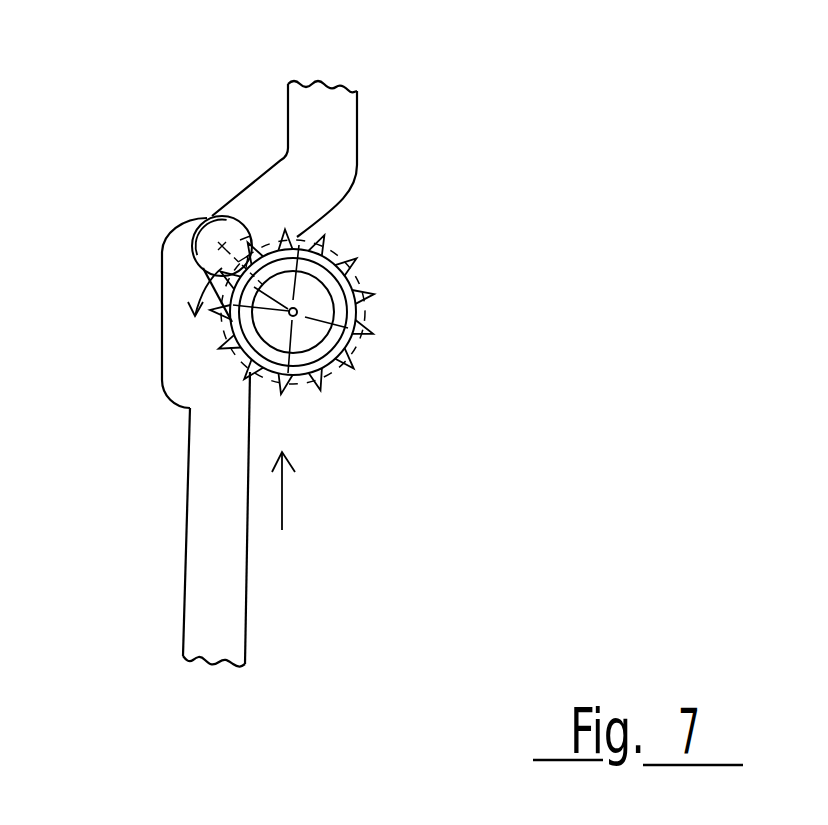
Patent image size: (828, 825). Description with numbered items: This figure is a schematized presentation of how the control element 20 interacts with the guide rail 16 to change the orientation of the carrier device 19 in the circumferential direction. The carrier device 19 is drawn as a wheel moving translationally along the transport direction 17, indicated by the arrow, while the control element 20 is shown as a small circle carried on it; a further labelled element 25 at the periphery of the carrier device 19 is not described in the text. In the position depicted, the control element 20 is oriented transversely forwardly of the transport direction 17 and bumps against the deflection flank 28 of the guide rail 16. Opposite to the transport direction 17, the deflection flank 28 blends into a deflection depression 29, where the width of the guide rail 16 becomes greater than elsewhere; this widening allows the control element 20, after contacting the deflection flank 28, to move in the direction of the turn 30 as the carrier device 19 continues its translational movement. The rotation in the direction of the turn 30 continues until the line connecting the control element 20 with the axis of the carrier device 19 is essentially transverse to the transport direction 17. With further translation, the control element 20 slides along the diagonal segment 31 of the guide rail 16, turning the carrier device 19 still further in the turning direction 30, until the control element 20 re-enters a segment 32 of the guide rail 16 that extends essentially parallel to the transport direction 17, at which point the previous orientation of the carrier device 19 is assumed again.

The guide rail 16 is at (247, 577).
The transport direction 17 is at (283, 499).
The carrier device 19 is at (317, 307).
The control element 20 is at (219, 244).
The gear teeth 25 is at (357, 332).
The deflection flank 28 is at (193, 217).
The deflection depression 29 is at (173, 348).
The direction of the turn 30 is at (207, 277).
The diagonal segment 31 is at (268, 190).
The segment 32 is at (343, 137).